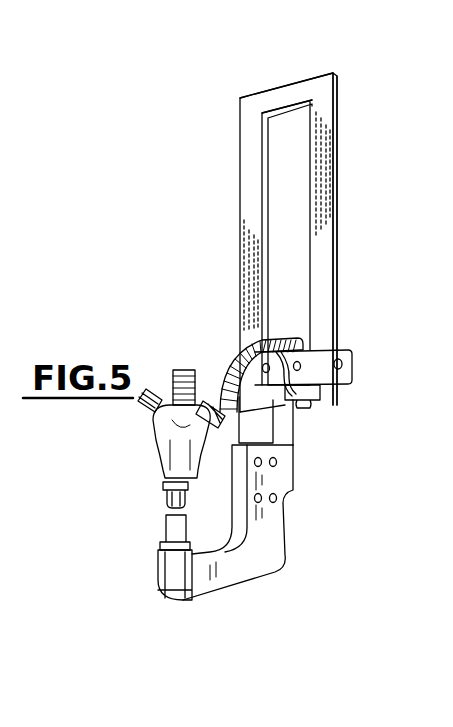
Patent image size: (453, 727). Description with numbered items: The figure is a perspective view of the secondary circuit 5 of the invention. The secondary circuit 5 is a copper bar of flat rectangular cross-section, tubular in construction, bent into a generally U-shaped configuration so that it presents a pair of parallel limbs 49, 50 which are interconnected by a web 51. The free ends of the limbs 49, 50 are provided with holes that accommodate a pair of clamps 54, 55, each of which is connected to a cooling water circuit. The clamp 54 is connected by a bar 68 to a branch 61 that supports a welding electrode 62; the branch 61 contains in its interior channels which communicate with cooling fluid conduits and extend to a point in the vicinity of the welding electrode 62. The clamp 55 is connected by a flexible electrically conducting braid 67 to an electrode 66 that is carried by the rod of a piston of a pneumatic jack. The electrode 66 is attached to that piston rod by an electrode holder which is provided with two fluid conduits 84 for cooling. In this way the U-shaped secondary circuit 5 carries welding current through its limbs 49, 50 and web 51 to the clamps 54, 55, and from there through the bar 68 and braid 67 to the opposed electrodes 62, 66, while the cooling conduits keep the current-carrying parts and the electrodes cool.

The secondary circuit 5 is at (360, 90).
The limb 49 is at (253, 166).
The limb 50 is at (325, 183).
The web 51 is at (290, 88).
The clamp 54 is at (352, 360).
The clamp 55 is at (290, 357).
The branch 61 is at (232, 572).
The welding electrode 62 is at (167, 520).
The electrode 66 is at (165, 498).
The flexible electrically conducted braid 67 is at (270, 335).
The bar 68 is at (283, 423).
The fluid conduits 84 is at (143, 413).